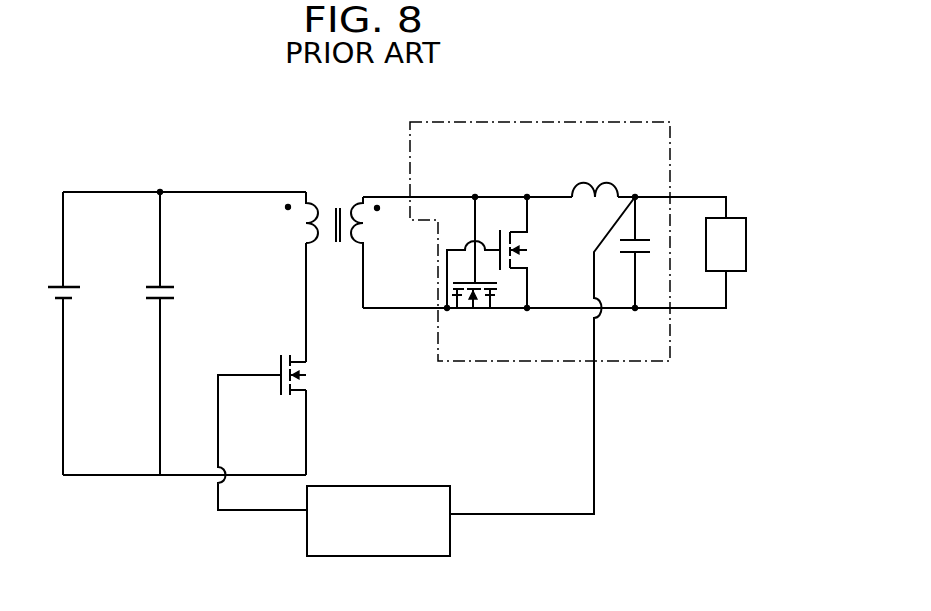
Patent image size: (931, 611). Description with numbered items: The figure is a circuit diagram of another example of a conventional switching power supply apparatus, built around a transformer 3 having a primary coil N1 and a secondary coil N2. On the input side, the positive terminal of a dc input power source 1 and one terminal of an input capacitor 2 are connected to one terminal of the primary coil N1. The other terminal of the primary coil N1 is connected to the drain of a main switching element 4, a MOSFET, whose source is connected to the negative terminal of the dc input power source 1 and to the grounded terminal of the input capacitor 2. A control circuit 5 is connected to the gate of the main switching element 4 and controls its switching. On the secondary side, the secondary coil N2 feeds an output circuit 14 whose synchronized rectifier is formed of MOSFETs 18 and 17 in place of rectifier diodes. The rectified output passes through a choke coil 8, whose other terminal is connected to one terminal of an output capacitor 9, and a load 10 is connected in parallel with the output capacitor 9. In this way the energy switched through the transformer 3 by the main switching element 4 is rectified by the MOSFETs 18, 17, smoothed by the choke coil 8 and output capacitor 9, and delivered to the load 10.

The dc input power source 1 is at (73, 286).
The input capacitor 2 is at (168, 287).
The transformer 3 is at (335, 221).
The primary coil N1 is at (296, 229).
The secondary coil N2 is at (379, 231).
The main switching element 4 is at (312, 372).
The control circuit 5 is at (372, 486).
The choke coil 8 is at (593, 185).
The output capacitor 9 is at (645, 258).
The load 10 is at (728, 216).
The output circuit 14 is at (594, 122).
The MOSFET 17 is at (476, 312).
The MOSFET 18 is at (535, 245).